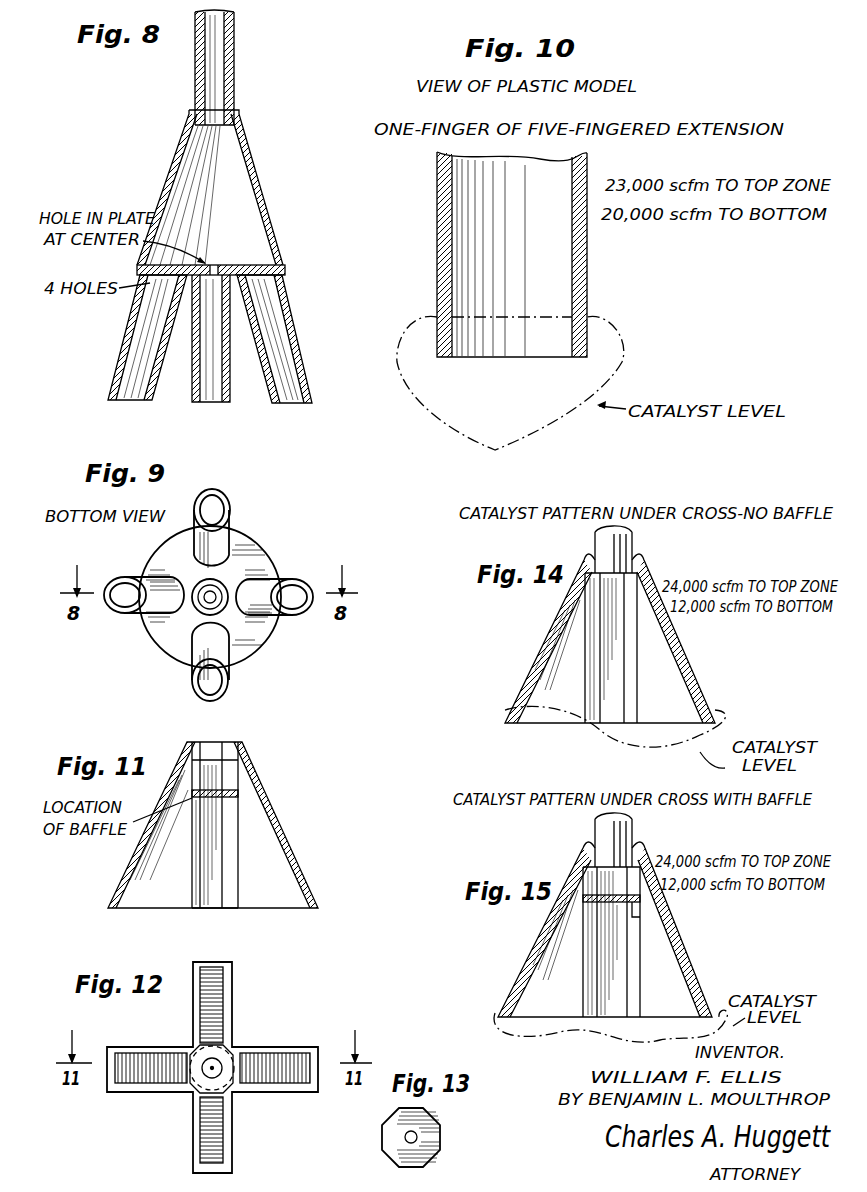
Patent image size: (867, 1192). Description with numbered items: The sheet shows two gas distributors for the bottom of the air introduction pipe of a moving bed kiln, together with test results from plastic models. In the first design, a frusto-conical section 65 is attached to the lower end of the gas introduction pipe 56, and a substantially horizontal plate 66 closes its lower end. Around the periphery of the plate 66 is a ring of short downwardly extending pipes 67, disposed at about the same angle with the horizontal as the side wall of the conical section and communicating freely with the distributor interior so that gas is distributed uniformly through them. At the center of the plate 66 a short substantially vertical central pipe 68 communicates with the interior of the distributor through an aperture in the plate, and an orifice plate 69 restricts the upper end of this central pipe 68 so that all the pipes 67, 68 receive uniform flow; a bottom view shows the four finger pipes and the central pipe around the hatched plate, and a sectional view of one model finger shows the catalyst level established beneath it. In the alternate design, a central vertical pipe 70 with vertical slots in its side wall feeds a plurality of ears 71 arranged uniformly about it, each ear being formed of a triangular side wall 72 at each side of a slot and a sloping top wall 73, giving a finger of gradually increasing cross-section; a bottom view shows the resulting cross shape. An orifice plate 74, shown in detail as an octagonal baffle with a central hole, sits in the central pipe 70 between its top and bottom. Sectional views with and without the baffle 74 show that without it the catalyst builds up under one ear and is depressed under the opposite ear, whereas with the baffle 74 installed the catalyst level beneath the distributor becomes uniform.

In FIG. 8, the gas introduction pipe 56 is at (194, 80).
In FIG. 8, the frusto-conical section 65 is at (178, 159).
In FIG. 8, the horizontal plate 66 is at (232, 270).
In FIG. 9, the horizontal plate 66 is at (157, 632).
In FIG. 8, the downwardly extending pipes 67 is at (295, 333).
In FIG. 9, the downwardly extending pipes 67 is at (292, 579).
In FIG. 8, the central short pipe 68 is at (229, 380).
In FIG. 9, the central short pipe 68 is at (195, 585).
In FIG. 8, the orifice plate 69 is at (213, 270).
In FIG. 9, the orifice plate 69 is at (212, 594).
In FIG. 11, the central vertical pipe 70 is at (215, 778).
In FIG. 11, the ears 71 is at (281, 830).
In FIG. 11, the triangular side wall 72 is at (273, 873).
In FIG. 12, the sloping top wall 73 is at (281, 1060).
In FIG. 11, the orifice plate 74 is at (238, 803).
In FIG. 15, the orifice plate 74 is at (633, 917).
In FIG. 12, the orifice plate 74 is at (196, 1092).
In FIG. 13, the orifice plate 74 is at (384, 1138).